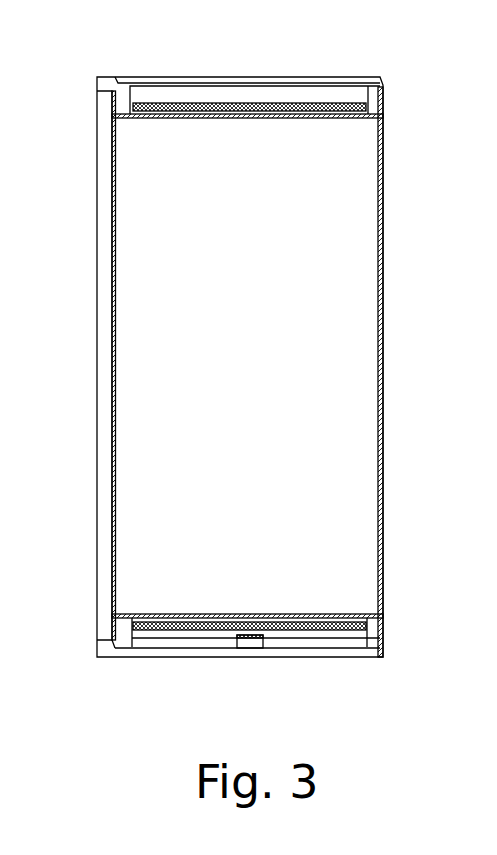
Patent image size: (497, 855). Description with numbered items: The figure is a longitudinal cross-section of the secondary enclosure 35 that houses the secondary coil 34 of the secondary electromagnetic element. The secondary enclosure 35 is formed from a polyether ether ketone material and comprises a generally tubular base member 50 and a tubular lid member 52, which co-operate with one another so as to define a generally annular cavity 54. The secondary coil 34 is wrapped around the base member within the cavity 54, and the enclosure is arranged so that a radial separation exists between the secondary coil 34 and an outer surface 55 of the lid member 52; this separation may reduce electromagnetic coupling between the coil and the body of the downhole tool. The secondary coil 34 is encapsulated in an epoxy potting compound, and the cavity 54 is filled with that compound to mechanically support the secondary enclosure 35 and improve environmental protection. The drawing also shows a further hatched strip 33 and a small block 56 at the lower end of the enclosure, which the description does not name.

The base member 50 is at (104, 77).
The lid member 52 is at (347, 77).
The outer surface 55 is at (158, 77).
The cavity 54 is at (280, 85).
The secondary coil 34 is at (204, 105).
The lower light source strip 33 is at (347, 640).
The connector block 56 is at (253, 648).
The secondary enclosure 35 is at (132, 672).